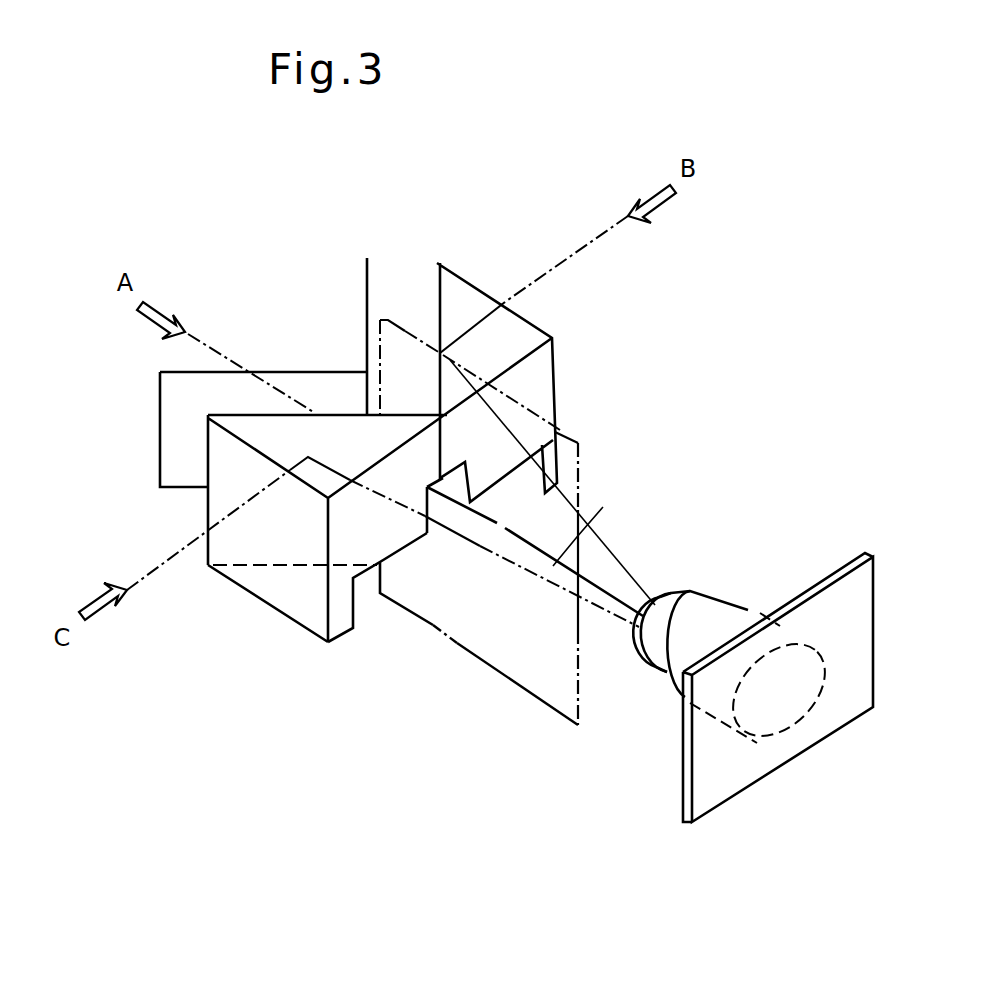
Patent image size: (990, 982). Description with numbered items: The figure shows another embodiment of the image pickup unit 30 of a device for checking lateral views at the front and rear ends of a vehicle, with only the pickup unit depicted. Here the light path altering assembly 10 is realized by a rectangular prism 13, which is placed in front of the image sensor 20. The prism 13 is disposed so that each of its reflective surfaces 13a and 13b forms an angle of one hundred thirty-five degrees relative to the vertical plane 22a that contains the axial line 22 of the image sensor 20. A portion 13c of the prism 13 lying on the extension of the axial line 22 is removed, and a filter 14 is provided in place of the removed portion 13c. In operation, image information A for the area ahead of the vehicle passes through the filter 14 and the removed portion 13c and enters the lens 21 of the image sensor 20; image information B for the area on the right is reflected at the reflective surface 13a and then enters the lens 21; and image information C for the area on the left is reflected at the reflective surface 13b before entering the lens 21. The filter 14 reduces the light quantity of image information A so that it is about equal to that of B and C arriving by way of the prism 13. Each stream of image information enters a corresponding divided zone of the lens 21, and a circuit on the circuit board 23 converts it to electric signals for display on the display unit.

The light path altering assembly 10 is at (618, 347).
The rectangular prism 13 is at (548, 330).
The reflective surface 13a is at (442, 312).
The reflective surface 13b is at (375, 422).
The removed portion 13c is at (410, 543).
The filter 14 is at (310, 385).
The image sensor 20 is at (742, 615).
The lens 21 is at (660, 596).
The axial line 22 is at (600, 511).
The vertical plane 22a is at (518, 672).
The circuit board 23 is at (858, 632).
The image pickup unit 30 is at (793, 422).